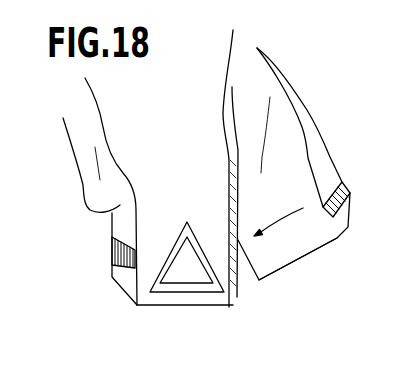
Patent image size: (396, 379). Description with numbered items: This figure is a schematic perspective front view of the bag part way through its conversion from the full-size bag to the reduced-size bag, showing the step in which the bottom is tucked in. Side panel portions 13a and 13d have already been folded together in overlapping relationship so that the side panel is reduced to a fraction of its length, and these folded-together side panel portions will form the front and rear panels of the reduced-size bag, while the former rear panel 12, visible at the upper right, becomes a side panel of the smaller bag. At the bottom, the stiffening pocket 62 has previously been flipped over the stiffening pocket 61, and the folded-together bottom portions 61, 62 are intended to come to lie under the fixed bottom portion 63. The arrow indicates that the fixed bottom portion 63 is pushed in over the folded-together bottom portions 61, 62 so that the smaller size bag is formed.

The rear panel 12 is at (315, 128).
The side panel portion 13d is at (167, 142).
The side panel portion 13a is at (309, 223).
The fixed bottom portion 63 is at (293, 258).
The bottom stiffening pocket 61 is at (198, 307).
The bottom stiffening pocket 62 is at (173, 289).